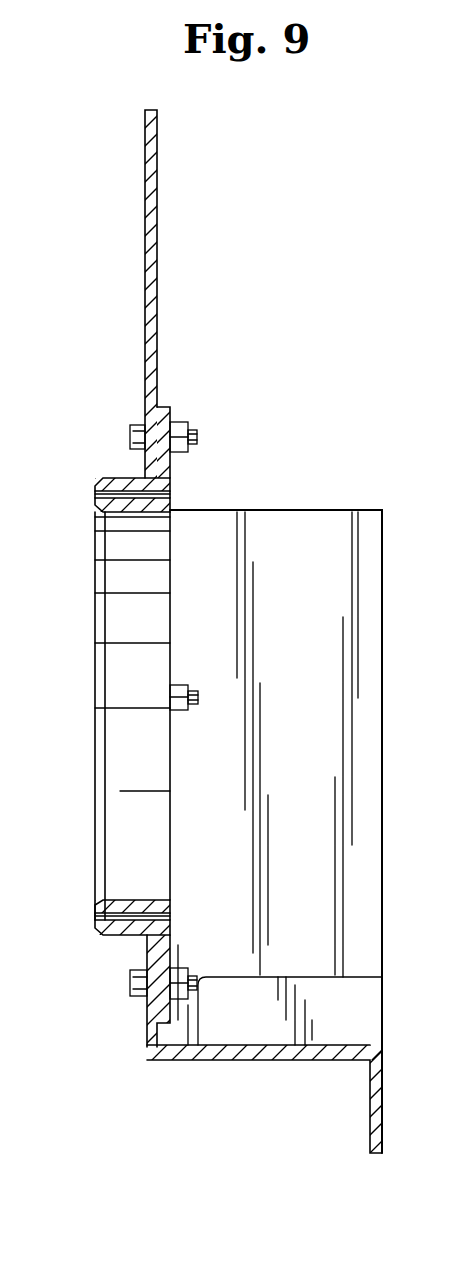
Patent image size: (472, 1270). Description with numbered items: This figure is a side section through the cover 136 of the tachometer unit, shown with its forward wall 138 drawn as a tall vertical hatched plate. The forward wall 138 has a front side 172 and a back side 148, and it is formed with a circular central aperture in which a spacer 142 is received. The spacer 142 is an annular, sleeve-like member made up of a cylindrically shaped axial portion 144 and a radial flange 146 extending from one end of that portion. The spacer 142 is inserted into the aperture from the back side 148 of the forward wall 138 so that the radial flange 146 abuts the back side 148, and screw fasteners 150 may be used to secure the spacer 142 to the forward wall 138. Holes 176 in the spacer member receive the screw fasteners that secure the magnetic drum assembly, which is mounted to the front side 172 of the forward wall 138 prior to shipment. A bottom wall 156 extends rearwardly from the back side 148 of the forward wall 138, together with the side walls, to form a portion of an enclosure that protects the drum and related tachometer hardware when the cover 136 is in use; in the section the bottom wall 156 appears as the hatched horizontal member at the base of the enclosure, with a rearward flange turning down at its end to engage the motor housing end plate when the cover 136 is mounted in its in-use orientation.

The cover 136 is at (318, 268).
The forward wall 138 is at (140, 220).
The spacer 142 is at (97, 864).
The axial portion 144 is at (122, 478).
The radial flange 146 is at (163, 464).
The back side 148 is at (158, 268).
The screw fasteners 150 is at (128, 981).
The bottom wall 156 is at (225, 1052).
The front side 172 is at (147, 352).
The holes 176 is at (168, 503).